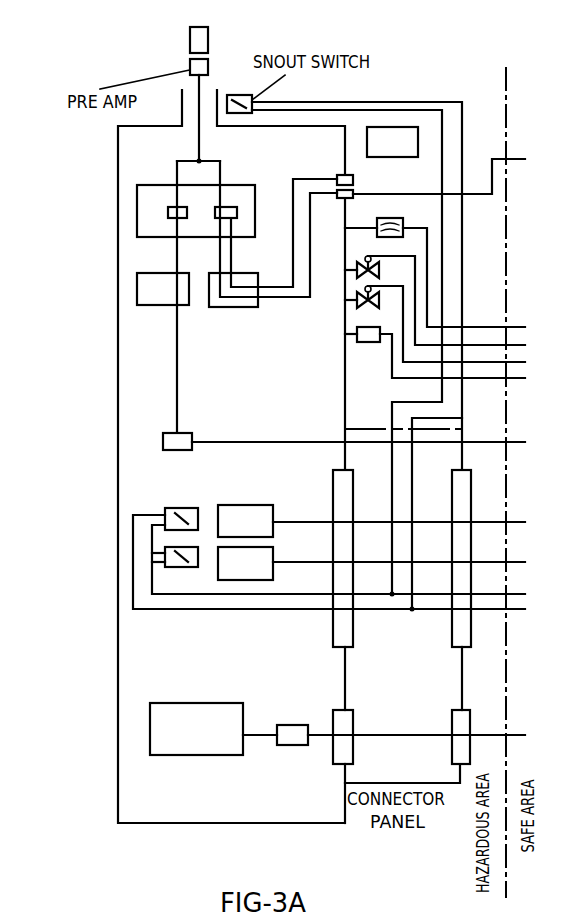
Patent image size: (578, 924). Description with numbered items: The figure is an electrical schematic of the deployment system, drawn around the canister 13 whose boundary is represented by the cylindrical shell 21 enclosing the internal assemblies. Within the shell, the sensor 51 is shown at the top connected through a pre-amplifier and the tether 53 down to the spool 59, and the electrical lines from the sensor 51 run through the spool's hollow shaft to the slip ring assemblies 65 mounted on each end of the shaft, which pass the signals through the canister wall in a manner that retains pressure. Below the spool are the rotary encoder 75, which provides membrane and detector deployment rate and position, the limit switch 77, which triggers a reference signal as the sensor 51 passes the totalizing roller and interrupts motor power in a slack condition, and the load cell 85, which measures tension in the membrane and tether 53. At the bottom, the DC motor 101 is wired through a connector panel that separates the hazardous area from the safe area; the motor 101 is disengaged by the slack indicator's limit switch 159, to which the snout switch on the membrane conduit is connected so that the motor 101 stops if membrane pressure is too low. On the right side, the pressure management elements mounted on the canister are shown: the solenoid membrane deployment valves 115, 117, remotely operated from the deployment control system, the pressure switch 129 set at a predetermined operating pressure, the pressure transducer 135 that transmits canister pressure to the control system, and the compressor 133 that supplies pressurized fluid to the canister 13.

The canister 13 is at (108, 445).
The cylindrical shell 21 is at (118, 358).
The sensor 51 is at (190, 43).
The tether 53 is at (199, 147).
The spool 59 is at (137, 210).
The slip ring assemblies 65 is at (137, 285).
The rotary encoder 75 is at (250, 505).
The limit switch 77 is at (163, 519).
The load cell 85 is at (258, 577).
The DC motor 101 is at (203, 750).
The membrane deployment valve 115 is at (380, 267).
The membrane deployment valve 117 is at (380, 298).
The pressure switch 129 is at (403, 223).
The compressor 133 is at (407, 131).
The pressure transducer 135 is at (358, 343).
The limit switch 159 is at (163, 557).